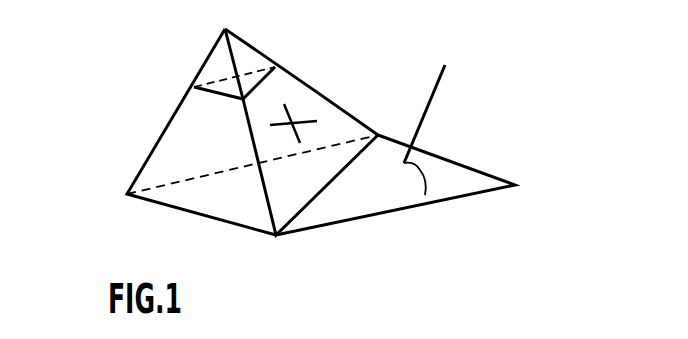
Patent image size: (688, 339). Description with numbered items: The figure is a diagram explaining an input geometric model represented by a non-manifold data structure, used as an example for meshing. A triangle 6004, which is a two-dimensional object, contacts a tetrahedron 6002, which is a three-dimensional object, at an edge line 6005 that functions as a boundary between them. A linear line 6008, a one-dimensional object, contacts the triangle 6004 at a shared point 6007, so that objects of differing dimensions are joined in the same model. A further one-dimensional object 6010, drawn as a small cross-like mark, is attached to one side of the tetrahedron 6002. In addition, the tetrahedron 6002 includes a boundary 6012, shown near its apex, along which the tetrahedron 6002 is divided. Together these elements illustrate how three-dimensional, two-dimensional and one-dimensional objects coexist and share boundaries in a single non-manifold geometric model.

The tetrahedron 6002 is at (185, 137).
The triangle 6004 is at (437, 168).
The edge line 6005 is at (315, 200).
The shared point 6007 is at (425, 195).
The linear line 6008 is at (437, 88).
The one-dimensional object 6010 is at (272, 125).
The boundary 6012 is at (218, 82).